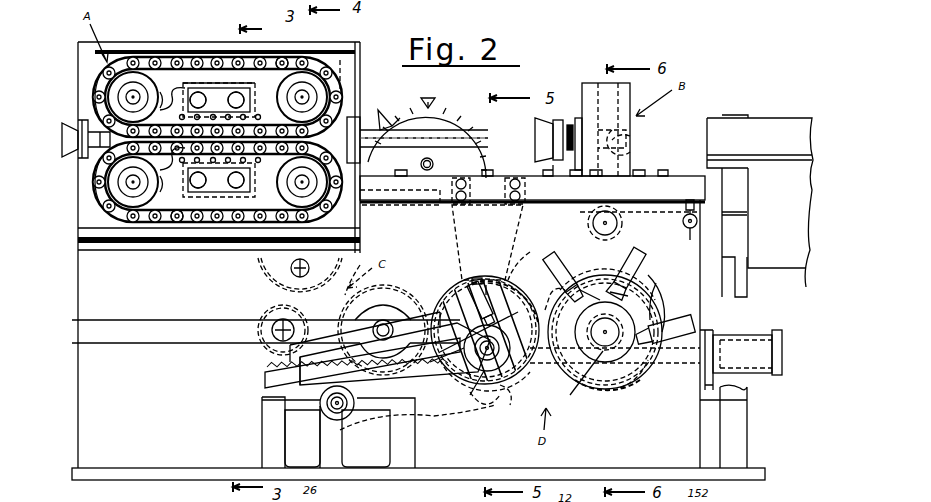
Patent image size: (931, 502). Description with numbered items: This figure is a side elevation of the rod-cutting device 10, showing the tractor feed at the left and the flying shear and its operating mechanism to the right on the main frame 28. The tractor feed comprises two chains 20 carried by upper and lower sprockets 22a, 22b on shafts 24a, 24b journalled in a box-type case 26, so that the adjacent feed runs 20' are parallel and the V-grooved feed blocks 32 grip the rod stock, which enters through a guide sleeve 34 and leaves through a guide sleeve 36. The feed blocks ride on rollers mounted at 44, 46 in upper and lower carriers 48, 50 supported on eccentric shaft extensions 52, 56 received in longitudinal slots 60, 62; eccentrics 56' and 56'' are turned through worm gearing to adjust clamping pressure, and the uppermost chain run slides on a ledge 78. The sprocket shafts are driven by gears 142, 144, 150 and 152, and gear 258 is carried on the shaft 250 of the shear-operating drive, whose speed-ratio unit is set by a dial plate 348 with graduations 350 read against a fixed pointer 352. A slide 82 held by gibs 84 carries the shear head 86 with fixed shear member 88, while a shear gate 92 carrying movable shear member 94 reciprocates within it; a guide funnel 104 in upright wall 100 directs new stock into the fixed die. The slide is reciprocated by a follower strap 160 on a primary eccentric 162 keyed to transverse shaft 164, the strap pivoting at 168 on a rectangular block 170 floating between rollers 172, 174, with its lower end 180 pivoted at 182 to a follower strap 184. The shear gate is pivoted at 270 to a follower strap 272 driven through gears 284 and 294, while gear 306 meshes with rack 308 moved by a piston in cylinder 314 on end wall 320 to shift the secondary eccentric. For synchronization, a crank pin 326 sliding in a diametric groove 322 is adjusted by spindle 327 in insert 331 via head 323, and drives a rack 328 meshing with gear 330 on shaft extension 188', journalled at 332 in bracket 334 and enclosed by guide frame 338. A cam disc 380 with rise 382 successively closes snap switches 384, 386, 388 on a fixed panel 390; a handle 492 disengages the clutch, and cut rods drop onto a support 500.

The main drive shaft 10 is at (234, 310).
The chains 20 is at (163, 149).
The feed runs 20' is at (75, 139).
The upper pair of sprockets 22a is at (150, 85).
The lower pair of sprockets 22b is at (160, 207).
The upper sprocket-carrying shaft 24a is at (133, 97).
The lower sprocket-carrying shaft 24b is at (133, 182).
The box-type case 26 is at (370, 42).
The main frame 28 is at (76, 433).
The feed blocks 32 is at (243, 85).
The guide sleeve 34 is at (66, 140).
The guide sleeve 36 is at (488, 135).
The roller mounting 44 is at (207, 100).
The roller mounting 46 is at (207, 172).
The upper carrier 48 is at (197, 92).
The lower carrier 50 is at (207, 186).
The shaft extensions (eccentrics) 52 is at (287, 60).
The shaft extensions (eccentrics) 56 is at (221, 156).
The lower eccentric 56' is at (300, 275).
The lower eccentric 56'' is at (155, 252).
The longitudinal slot 60 is at (187, 88).
The longitudinal slot 62 is at (218, 192).
The ledge 78 is at (232, 57).
The slide 82 is at (622, 226).
The gibs 84 is at (642, 186).
The shear head 86 is at (584, 90).
The fixed shear member 88 is at (578, 122).
The shear gate 92 is at (630, 150).
The movable shear member 94 is at (630, 136).
The upright wall 100 is at (560, 126).
The guide funnel 104 is at (537, 140).
The gear 142 is at (266, 314).
The gear 144 is at (372, 262).
The gear 150 is at (420, 164).
The gear 152 is at (342, 72).
The follower strap 160 is at (523, 278).
The primary eccentric 162 is at (518, 300).
The transverse shaft 164 is at (518, 372).
The pivot 168 is at (512, 222).
The rectangular block 170 is at (560, 150).
The rotary rollers 172 is at (460, 222).
The rotary rollers 174 is at (535, 205).
The lower end of follower strap 180 is at (508, 398).
The pivot connection 182 is at (485, 400).
The follower strap 184 is at (434, 416).
The shaft extension 188' is at (321, 423).
The shaft 250 is at (383, 320).
The gear 258 is at (414, 294).
The pivot connection 270 is at (530, 252).
The follower strap 272 is at (632, 270).
The gear 284 is at (623, 393).
The gear 294 is at (420, 300).
The gear 306 is at (666, 290).
The rack 308 is at (640, 372).
The cylinder 314 is at (752, 360).
The end wall 320 is at (712, 398).
The diametric groove 322 is at (480, 292).
The head 323 is at (474, 282).
The crank pin 326 is at (470, 360).
The adjustment spindle 327 is at (518, 310).
The rack 328 is at (372, 366).
The gear 330 is at (335, 372).
The fixed insert 331 is at (488, 285).
The journal 332 is at (350, 416).
The bracket 334 is at (264, 442).
The guide frame 338 is at (266, 388).
The dial plate 348 is at (466, 112).
The graduations 350 is at (387, 112).
The fixed pointer 352 is at (432, 94).
The cam disc 380 is at (607, 388).
The rise 382 is at (628, 292).
The snap switch 384 is at (658, 350).
The snap switch 386 is at (590, 280).
The snap switch 388 is at (565, 270).
The fixed panel 390 is at (656, 283).
The handle 492 is at (690, 208).
The support 500 is at (778, 128).